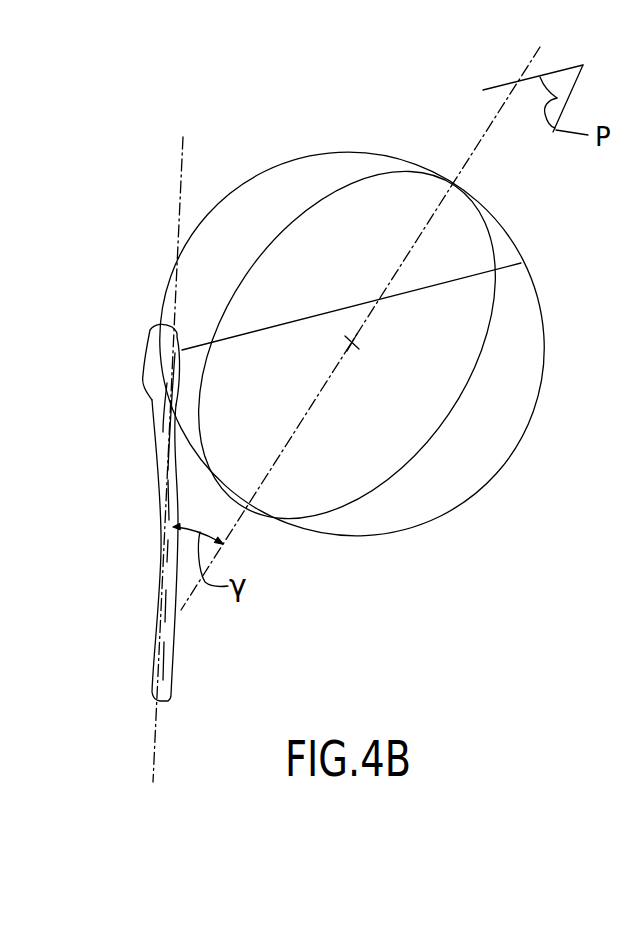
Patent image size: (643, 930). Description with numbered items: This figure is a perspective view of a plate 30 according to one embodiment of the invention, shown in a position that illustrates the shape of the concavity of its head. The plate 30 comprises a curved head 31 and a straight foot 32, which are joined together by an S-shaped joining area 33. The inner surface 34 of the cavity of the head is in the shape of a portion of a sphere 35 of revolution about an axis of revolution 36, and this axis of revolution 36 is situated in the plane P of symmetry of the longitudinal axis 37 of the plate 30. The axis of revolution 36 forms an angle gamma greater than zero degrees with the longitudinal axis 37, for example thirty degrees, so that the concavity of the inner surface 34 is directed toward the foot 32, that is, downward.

The plate 30 is at (111, 512).
The curved head 31 is at (152, 367).
The straight foot 32 is at (156, 591).
The S-shaped joining area 33 is at (147, 424).
The inner surface 34 is at (177, 337).
The sphere 35 is at (545, 330).
The axis of revolution 36 is at (478, 148).
The longitudinal axis 37 is at (153, 743).